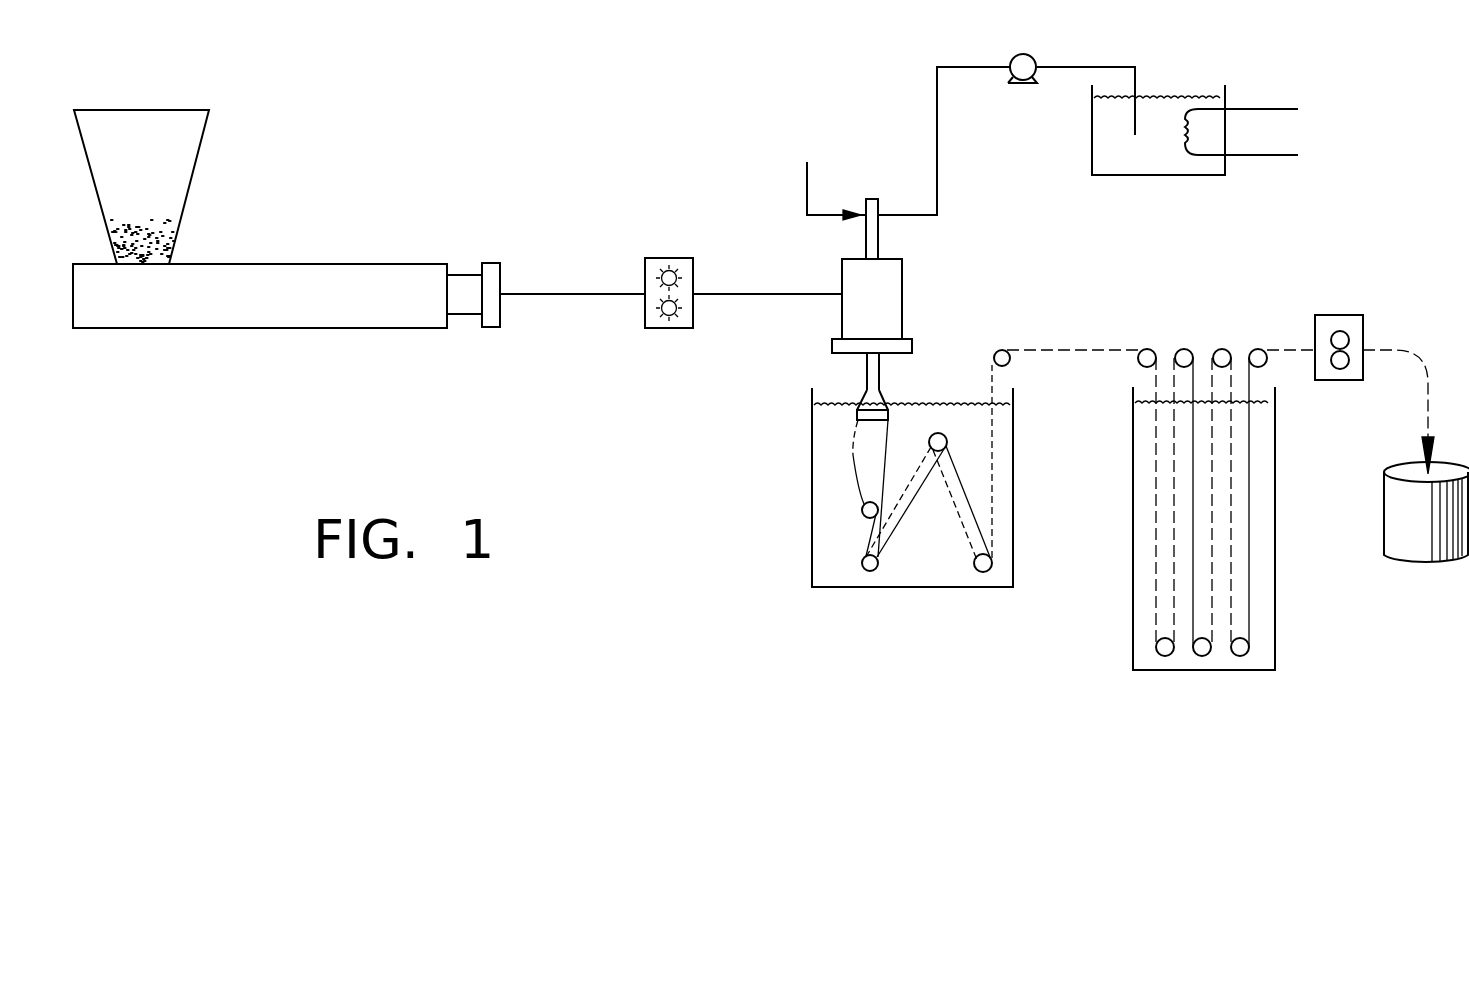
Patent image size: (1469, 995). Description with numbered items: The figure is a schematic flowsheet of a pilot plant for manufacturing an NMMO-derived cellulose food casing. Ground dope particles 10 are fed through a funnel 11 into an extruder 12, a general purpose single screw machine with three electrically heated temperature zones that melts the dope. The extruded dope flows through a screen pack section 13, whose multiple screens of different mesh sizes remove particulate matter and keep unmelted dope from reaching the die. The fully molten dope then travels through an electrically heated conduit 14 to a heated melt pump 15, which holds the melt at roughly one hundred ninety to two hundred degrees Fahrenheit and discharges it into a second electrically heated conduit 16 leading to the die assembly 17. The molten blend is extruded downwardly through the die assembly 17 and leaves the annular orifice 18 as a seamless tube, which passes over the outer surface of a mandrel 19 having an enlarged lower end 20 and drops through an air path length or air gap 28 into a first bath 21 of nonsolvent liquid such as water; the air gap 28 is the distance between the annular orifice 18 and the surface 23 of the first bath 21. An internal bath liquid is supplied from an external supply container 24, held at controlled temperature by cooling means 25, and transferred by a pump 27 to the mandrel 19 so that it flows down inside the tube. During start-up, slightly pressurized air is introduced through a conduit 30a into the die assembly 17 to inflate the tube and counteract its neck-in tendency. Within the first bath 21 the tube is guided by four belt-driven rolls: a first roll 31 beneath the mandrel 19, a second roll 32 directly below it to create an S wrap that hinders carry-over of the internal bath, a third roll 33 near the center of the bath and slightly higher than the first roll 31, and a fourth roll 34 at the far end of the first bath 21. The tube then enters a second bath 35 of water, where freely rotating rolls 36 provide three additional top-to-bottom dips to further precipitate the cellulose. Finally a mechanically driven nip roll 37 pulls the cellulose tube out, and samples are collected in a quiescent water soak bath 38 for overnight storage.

The ground dope particles 10 is at (160, 222).
The funnel 11 is at (198, 162).
The extruder 12 is at (262, 263).
The screen pack section 13 is at (495, 263).
The electrically heated conduit 14 is at (605, 292).
The heated melt pump 15 is at (670, 258).
The electrically heated conduit 16 is at (795, 292).
The die assembly 17 is at (897, 298).
The annular orifice 18 is at (882, 357).
The mandrel 19 is at (880, 230).
The enlarged lower end 20 is at (872, 432).
The first bath 21 is at (820, 528).
The surface of first bath 23 is at (968, 405).
The external supply container 24 is at (1115, 162).
The cooling means 25 is at (1275, 109).
The pump 27 is at (1022, 60).
The air path length (air gap) 28 is at (855, 400).
The conduit 30a is at (807, 192).
The first roll 31 is at (867, 513).
The second roll 32 is at (867, 567).
The third roll 33 is at (930, 450).
The fourth roll 34 is at (980, 567).
The second bath 35 is at (1133, 537).
The freely rotating rolls 36 is at (1183, 352).
The nip roll 37 is at (1350, 340).
The quiescent water soak bath 38 is at (1395, 525).